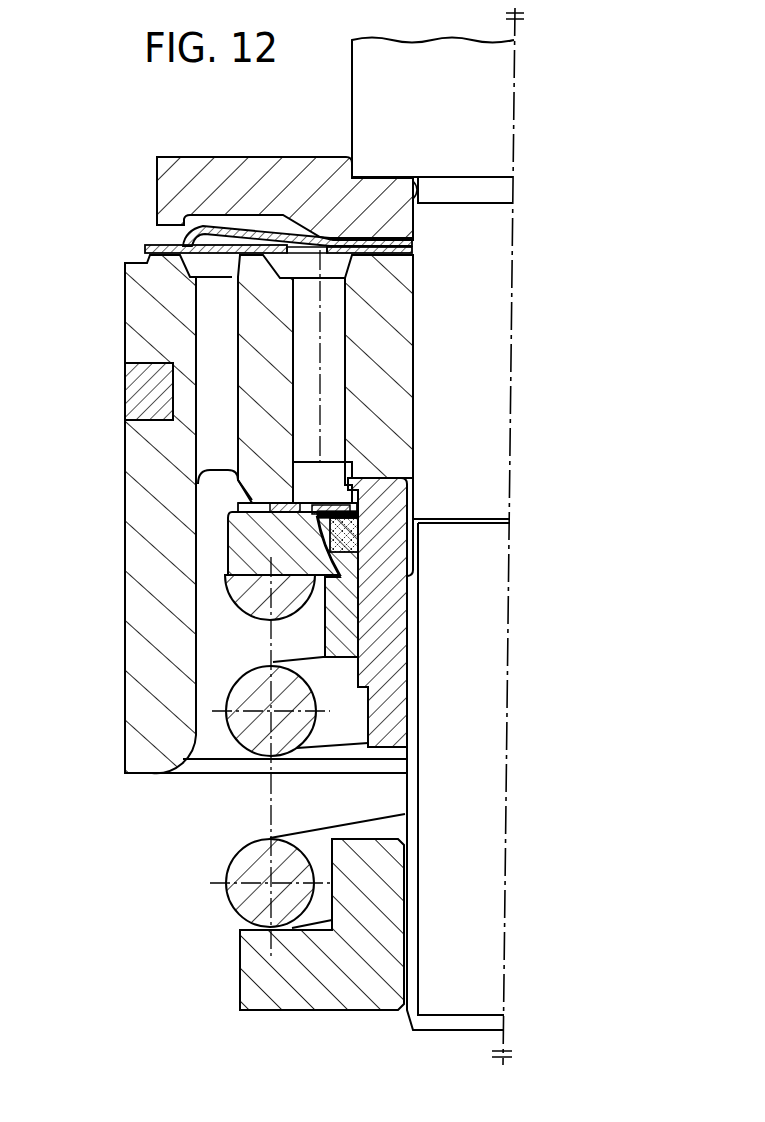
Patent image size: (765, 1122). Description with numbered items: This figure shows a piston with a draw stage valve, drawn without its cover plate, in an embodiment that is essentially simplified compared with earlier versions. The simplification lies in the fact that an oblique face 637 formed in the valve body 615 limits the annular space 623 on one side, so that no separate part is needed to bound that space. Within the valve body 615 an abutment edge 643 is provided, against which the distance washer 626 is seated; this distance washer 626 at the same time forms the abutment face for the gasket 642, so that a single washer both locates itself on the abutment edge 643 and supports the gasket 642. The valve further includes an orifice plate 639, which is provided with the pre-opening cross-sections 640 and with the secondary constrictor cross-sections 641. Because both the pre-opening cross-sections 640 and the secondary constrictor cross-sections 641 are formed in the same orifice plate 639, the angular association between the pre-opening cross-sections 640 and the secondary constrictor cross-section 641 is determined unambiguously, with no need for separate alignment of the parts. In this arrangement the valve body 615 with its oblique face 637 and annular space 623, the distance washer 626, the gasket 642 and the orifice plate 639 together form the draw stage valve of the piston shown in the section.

The valve body 615 is at (238, 505).
The annular space 623 is at (340, 510).
The distance washer 626 is at (412, 512).
The oblique face 637 is at (300, 512).
The orifice plate 639 is at (297, 507).
The pre-opening cross-sections 640 is at (412, 484).
The secondary constrictor cross-sections 641 is at (238, 473).
The gasket 642 is at (332, 527).
The abutment edge 643 is at (338, 560).